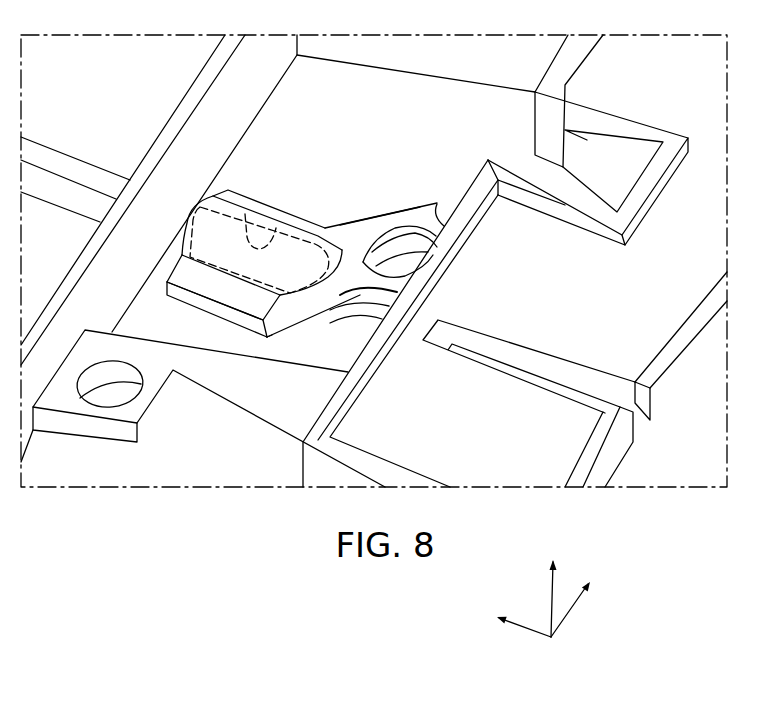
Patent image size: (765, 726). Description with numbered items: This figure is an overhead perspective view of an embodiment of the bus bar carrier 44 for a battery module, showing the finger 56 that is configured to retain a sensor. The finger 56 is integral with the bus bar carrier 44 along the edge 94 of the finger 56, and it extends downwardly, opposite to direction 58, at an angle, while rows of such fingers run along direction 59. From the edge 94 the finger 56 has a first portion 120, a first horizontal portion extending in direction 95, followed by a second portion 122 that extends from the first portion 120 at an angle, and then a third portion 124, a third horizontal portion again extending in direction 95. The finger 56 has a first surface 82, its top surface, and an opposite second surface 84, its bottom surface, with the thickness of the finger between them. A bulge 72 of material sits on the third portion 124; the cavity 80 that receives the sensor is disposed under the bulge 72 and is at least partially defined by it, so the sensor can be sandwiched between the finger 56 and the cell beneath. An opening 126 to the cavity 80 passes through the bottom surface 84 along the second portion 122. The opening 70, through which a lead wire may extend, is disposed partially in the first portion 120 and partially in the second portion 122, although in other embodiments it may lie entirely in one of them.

The bus bar carrier 44 is at (671, 248).
The finger 56 is at (340, 150).
The direction 58 is at (551, 606).
The direction 59 is at (570, 617).
The opening 70 is at (405, 262).
The bulge 72 is at (203, 205).
The cavity 80 is at (277, 214).
The first surface 82 is at (368, 220).
The second surface 84 is at (185, 313).
The edge 94 is at (437, 204).
The direction 95 is at (530, 632).
The first portion 120 is at (340, 296).
The second portion 122 is at (293, 296).
The third portion 124 is at (235, 297).
The opening 126 is at (333, 248).